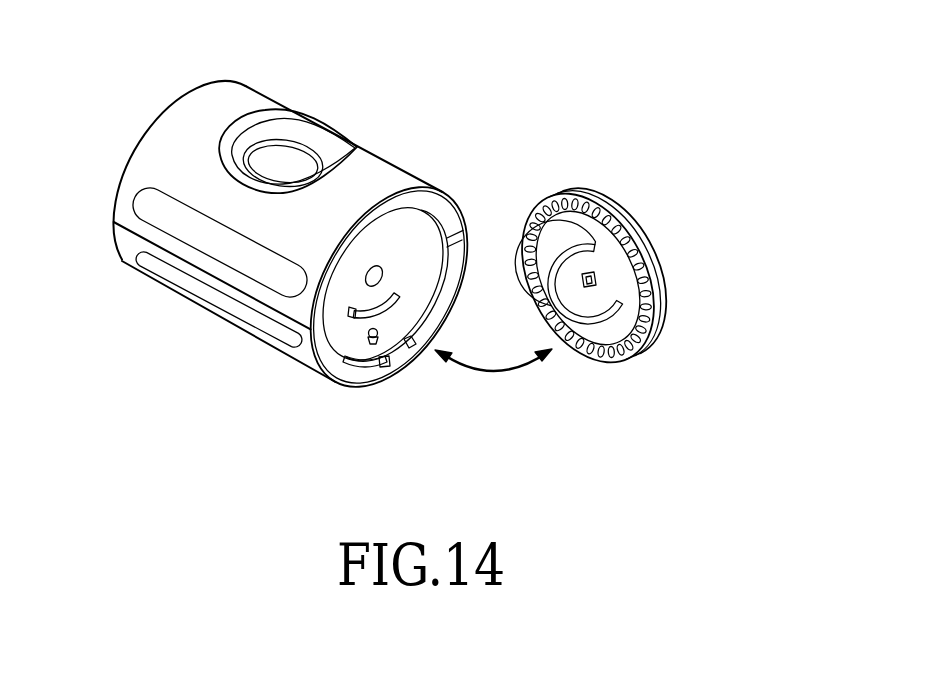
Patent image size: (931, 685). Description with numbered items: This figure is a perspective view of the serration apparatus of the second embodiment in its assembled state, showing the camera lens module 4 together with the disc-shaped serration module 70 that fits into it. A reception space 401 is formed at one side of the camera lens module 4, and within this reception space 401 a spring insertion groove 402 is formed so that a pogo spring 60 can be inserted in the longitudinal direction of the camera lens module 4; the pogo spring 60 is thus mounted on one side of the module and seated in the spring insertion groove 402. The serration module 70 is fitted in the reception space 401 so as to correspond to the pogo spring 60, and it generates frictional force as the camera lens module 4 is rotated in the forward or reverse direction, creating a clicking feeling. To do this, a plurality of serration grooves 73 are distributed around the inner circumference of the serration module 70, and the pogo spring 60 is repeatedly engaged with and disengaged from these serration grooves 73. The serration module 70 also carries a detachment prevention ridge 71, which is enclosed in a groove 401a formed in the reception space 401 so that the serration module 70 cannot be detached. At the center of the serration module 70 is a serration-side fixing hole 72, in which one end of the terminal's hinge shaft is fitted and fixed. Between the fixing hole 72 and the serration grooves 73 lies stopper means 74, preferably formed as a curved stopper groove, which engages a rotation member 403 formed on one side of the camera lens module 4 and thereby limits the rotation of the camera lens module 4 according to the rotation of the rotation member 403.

The camera lens module 4 is at (250, 97).
The reception space 401 is at (417, 220).
The groove 401a is at (390, 366).
The spring insertion groove 402 is at (370, 338).
The rotation member 403 is at (343, 362).
The pogo spring 60 is at (407, 350).
The serration module 70 is at (747, 188).
The detachment prevention ridge 71 is at (600, 194).
The serration-side fixing hole 72 is at (594, 279).
The serration grooves 73 is at (617, 238).
The stopper means 74 is at (613, 310).